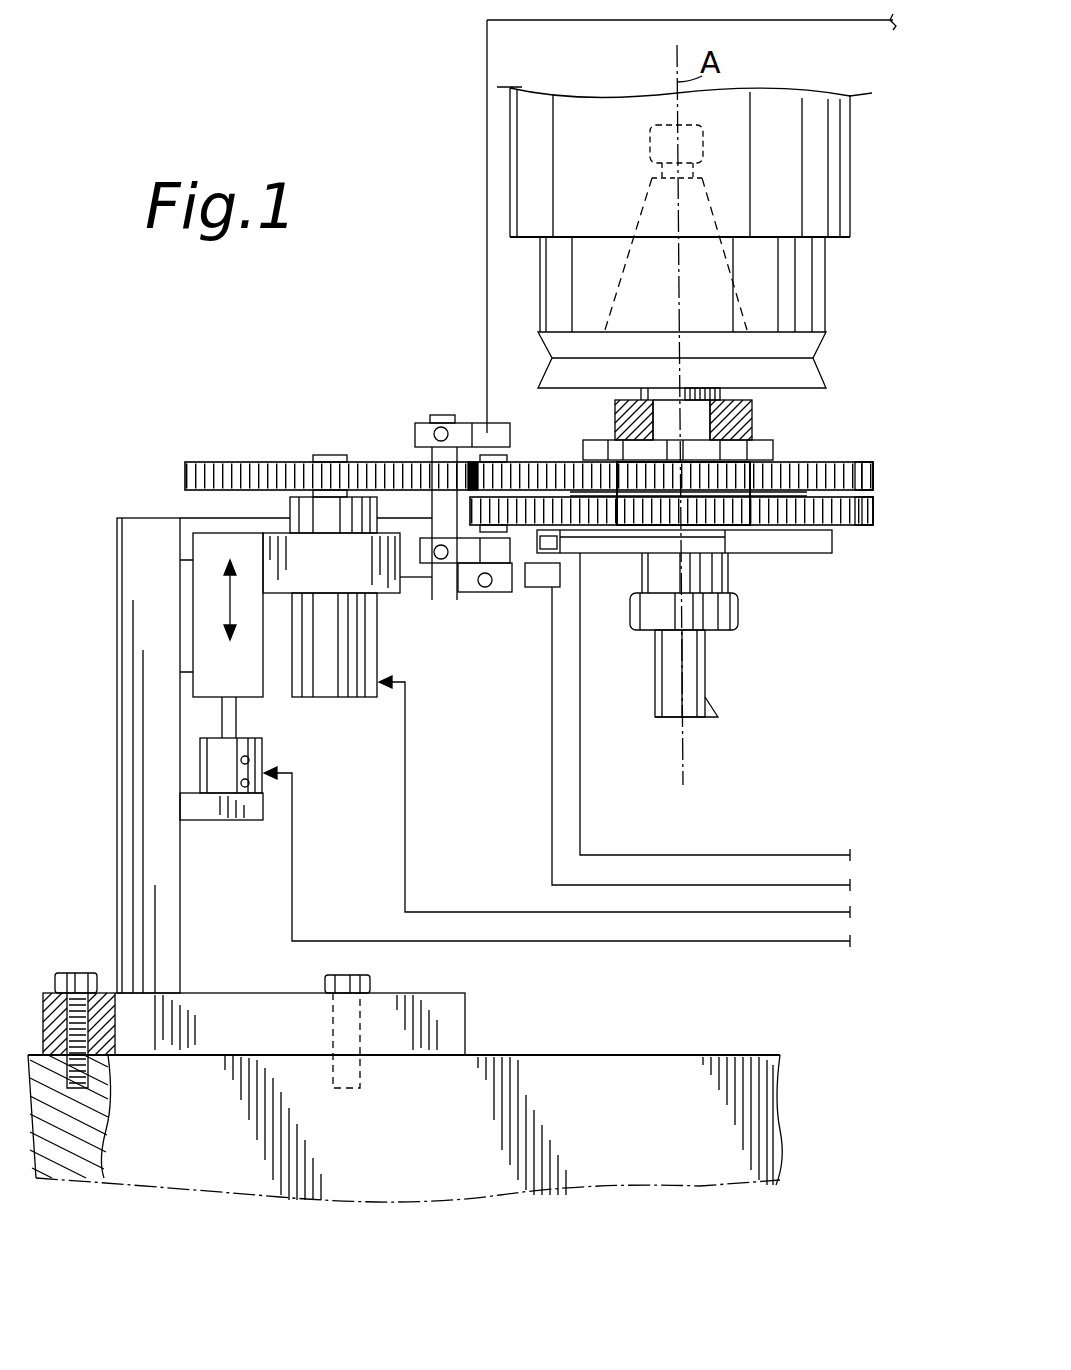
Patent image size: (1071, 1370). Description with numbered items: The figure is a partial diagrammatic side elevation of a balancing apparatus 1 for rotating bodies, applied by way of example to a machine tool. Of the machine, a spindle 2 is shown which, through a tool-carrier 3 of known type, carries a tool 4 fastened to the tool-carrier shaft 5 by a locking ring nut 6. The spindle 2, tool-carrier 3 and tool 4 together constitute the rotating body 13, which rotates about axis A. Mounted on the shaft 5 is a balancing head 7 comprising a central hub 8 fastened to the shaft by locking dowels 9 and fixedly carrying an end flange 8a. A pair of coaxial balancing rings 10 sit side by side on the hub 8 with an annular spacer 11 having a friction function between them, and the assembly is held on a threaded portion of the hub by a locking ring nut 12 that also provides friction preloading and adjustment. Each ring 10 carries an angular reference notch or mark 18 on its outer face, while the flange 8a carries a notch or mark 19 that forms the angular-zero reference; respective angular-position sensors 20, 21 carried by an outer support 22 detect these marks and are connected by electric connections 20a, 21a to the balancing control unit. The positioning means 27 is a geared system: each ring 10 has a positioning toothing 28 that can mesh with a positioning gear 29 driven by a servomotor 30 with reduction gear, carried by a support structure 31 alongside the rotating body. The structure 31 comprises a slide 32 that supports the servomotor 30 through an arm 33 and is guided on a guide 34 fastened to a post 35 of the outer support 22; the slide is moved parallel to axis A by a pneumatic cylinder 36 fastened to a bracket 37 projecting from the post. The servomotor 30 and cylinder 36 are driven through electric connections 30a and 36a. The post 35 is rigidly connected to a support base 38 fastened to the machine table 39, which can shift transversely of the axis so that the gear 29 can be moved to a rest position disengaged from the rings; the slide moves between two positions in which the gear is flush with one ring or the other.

The balancing apparatus 1 is at (368, 222).
The spindle 2 is at (834, 238).
The tool-carrier 3 is at (829, 362).
The tool 4 is at (695, 687).
The tool-carrier shaft 5 is at (710, 573).
The locking ring nut 6 is at (730, 612).
The balancing head 7 is at (853, 406).
The central hub 8 is at (612, 433).
The end flange 8a is at (787, 548).
The locking dowels 9 is at (613, 418).
The balancing rings 10 is at (876, 524).
The annular spacer 11 is at (875, 495).
The locking ring nut 12 is at (770, 452).
The rotating body 13 is at (522, 360).
The angular reference notch or mark 18 is at (512, 452).
The angular reference notch or mark 19 is at (560, 545).
The angular-position sensor 20 is at (487, 425).
The electric connection 20a is at (743, 857).
The angular-position sensor 21 is at (543, 593).
The electric connection 21a is at (663, 884).
The outer support 22 is at (193, 516).
The positioning means 27 is at (357, 421).
The positioning toothing 28 is at (852, 461).
The positioning gear 29 is at (247, 455).
The servomotor 30 is at (338, 690).
The electric connection 30a is at (633, 912).
The support structure 31 is at (280, 596).
The slide 32 is at (240, 686).
The arm 33 is at (388, 583).
The guide 34 is at (205, 624).
The post 35 is at (170, 900).
The pneumatic cylinder 36 is at (252, 758).
The electric connection 36a is at (720, 942).
The bracket 37 is at (188, 813).
The support base 38 is at (455, 1032).
The machine table 39 is at (552, 1063).